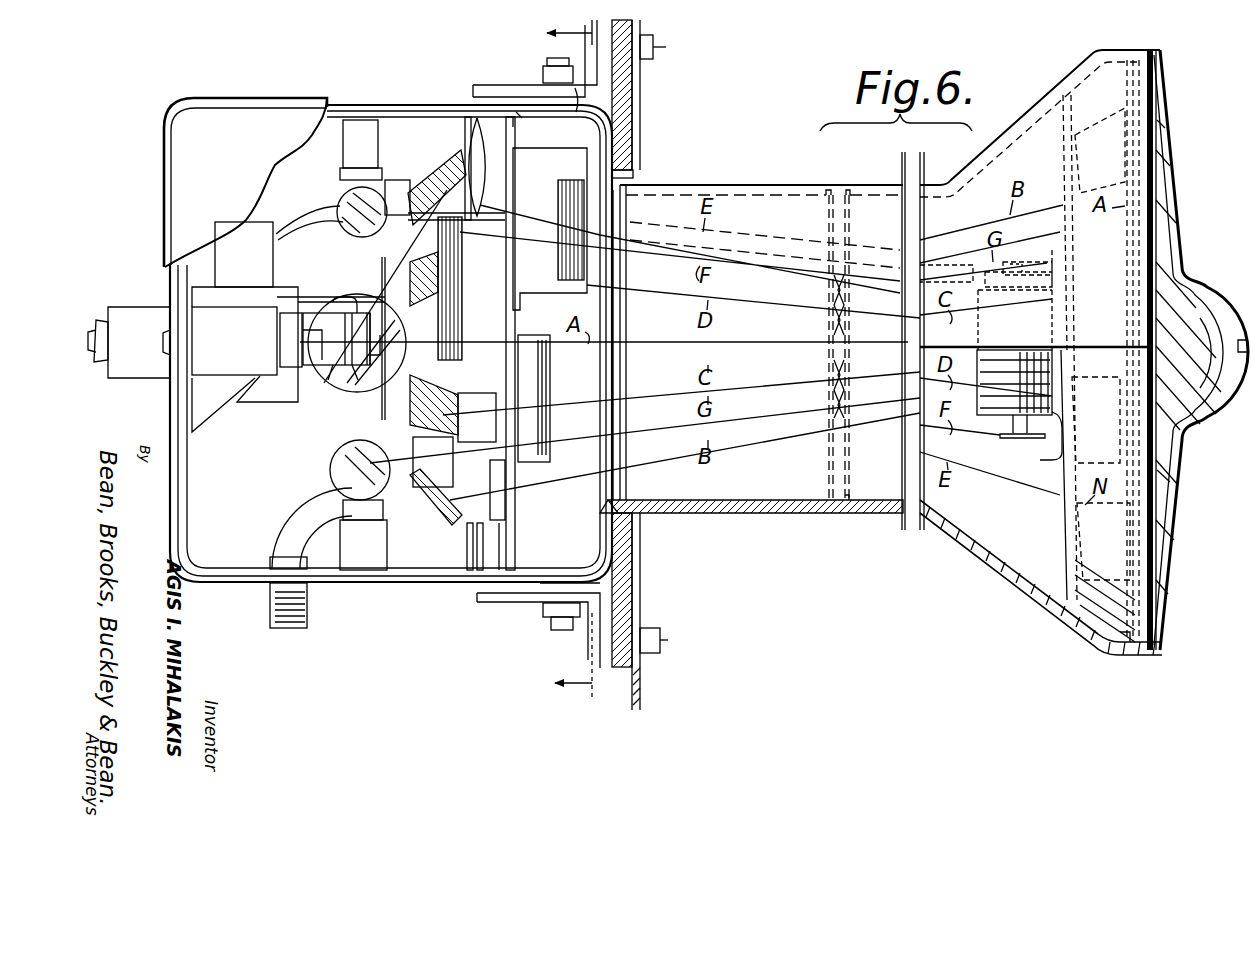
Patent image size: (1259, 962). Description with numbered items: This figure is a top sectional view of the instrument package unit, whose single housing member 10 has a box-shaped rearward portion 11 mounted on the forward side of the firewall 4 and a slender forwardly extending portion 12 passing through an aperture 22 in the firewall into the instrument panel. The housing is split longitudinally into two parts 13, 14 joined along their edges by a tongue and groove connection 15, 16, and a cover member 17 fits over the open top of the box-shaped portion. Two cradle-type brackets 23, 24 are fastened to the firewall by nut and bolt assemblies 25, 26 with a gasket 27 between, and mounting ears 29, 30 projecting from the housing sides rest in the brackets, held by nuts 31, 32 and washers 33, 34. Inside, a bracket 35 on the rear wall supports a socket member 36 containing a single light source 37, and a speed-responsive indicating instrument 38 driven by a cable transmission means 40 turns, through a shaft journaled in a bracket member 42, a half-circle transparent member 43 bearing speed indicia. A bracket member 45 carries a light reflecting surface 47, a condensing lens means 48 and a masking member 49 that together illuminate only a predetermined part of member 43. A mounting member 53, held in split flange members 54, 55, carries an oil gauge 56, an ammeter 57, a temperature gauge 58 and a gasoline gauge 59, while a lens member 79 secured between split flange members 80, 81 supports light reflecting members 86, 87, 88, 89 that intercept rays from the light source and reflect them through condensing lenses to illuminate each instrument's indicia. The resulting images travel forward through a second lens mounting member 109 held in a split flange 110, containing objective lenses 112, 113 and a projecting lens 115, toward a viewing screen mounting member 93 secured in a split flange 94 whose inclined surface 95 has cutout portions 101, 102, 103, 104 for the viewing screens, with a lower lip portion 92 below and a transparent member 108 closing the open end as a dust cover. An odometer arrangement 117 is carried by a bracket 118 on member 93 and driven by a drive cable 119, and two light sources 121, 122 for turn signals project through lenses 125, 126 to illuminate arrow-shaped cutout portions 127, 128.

The firewall 4 is at (641, 690).
The housing member 10 is at (705, 181).
The box-shaped rearward portion 11 is at (162, 151).
The forwardly extending portion 12 is at (966, 544).
The housing part 13 is at (760, 190).
The housing part 14 is at (762, 514).
The tongue and groove connection 15 is at (1240, 397).
The tongue and groove connection 16 is at (179, 347).
The cover member 17 is at (252, 116).
The aperture 22 is at (641, 590).
The cradle-type bracket 23 is at (481, 88).
The cradle-type bracket 24 is at (484, 600).
The nut and bolt assembly 25 is at (666, 47).
The nut and bolt assembly 26 is at (660, 638).
The gasket 27 is at (636, 555).
The mounting ear 29 is at (577, 110).
The mounting ear 30 is at (558, 582).
The nut 31 is at (550, 62).
The nut 32 is at (551, 626).
The washer 33 is at (543, 81).
The washer 34 is at (547, 610).
The bracket 35 is at (212, 402).
The socket member 36 is at (252, 350).
The light source 37 is at (400, 333).
The speed-responsive indicating instrument 38 is at (240, 292).
The cable transmission means 40 is at (97, 318).
The bracket member 42 is at (300, 299).
The transparent member 43 is at (382, 275).
The bracket member 45 is at (311, 311).
The mirror or light reflecting surface 47 is at (343, 311).
The condensing lens means 48 is at (333, 389).
The masking member 49 is at (361, 374).
The mounting member 53 is at (517, 499).
The split flange member 54 is at (521, 119).
The split flange member 55 is at (522, 556).
The oil gauge 56 is at (492, 437).
The ammeter 57 is at (540, 376).
The temperature gauge 58 is at (470, 313).
The gasoline gauge 59 is at (560, 197).
The lens member 79 is at (472, 140).
The split flange member 80 is at (463, 126).
The split flange member 81 is at (462, 568).
The light reflecting member 86 is at (445, 512).
The light reflecting member 87 is at (425, 374).
The light reflecting member 88 is at (440, 264).
The light reflecting member 89 is at (428, 180).
The lower portion 92 is at (1168, 538).
The viewing screen mounting member 93 is at (1073, 147).
The split flange 94 is at (1124, 651).
The inclined surface 95 is at (1097, 100).
The cutout portion 101 is at (1078, 541).
The cutout portion 102 is at (1094, 406).
The cutout portion 103 is at (1058, 323).
The cutout portion 104 is at (1135, 139).
The transparent member 108 is at (1195, 312).
The second lens mounting member 109 is at (829, 478).
The split flange 110 is at (850, 500).
The objective lens 112 is at (832, 370).
The objective lens 113 is at (830, 316).
The projecting lens 115 is at (853, 356).
The odometer arrangement 117 is at (978, 326).
The bracket 118 is at (1052, 452).
The drive cable 119 is at (302, 211).
The light source 121 is at (345, 231).
The light source 122 is at (340, 458).
The lens 125 is at (828, 287).
The lens 126 is at (832, 398).
The arrow-shaped cutout portion 127 is at (1064, 500).
The arrow-shaped cutout portion 128 is at (1134, 209).